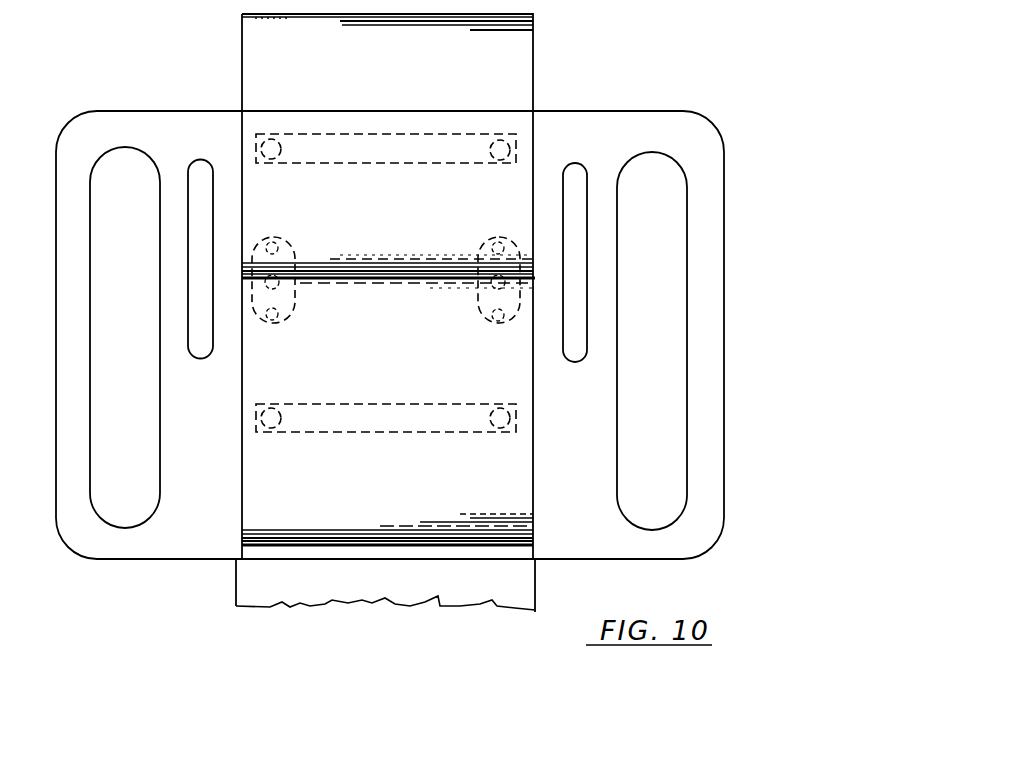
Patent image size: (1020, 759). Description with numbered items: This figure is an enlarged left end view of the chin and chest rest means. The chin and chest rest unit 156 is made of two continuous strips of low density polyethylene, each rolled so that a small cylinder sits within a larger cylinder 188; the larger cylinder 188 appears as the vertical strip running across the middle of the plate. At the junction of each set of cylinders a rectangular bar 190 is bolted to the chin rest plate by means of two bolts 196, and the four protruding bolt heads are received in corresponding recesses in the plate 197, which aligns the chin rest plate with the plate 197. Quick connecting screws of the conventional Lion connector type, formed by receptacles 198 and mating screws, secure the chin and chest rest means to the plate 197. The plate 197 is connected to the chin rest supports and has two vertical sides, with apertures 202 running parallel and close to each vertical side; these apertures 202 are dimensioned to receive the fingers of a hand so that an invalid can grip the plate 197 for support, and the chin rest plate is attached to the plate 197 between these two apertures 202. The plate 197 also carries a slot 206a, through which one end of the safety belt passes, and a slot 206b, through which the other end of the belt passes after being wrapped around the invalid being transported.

The chin and chest rest unit 156 is at (645, 100).
The larger cylinder 188 is at (246, 44).
The rectangular bar 190 is at (383, 134).
The bolt 196 is at (282, 142).
The plate 197 is at (106, 120).
The receptacle 198 is at (290, 302).
The aperture 202 is at (140, 364).
The slot 206a is at (205, 347).
The slot 206b is at (573, 350).